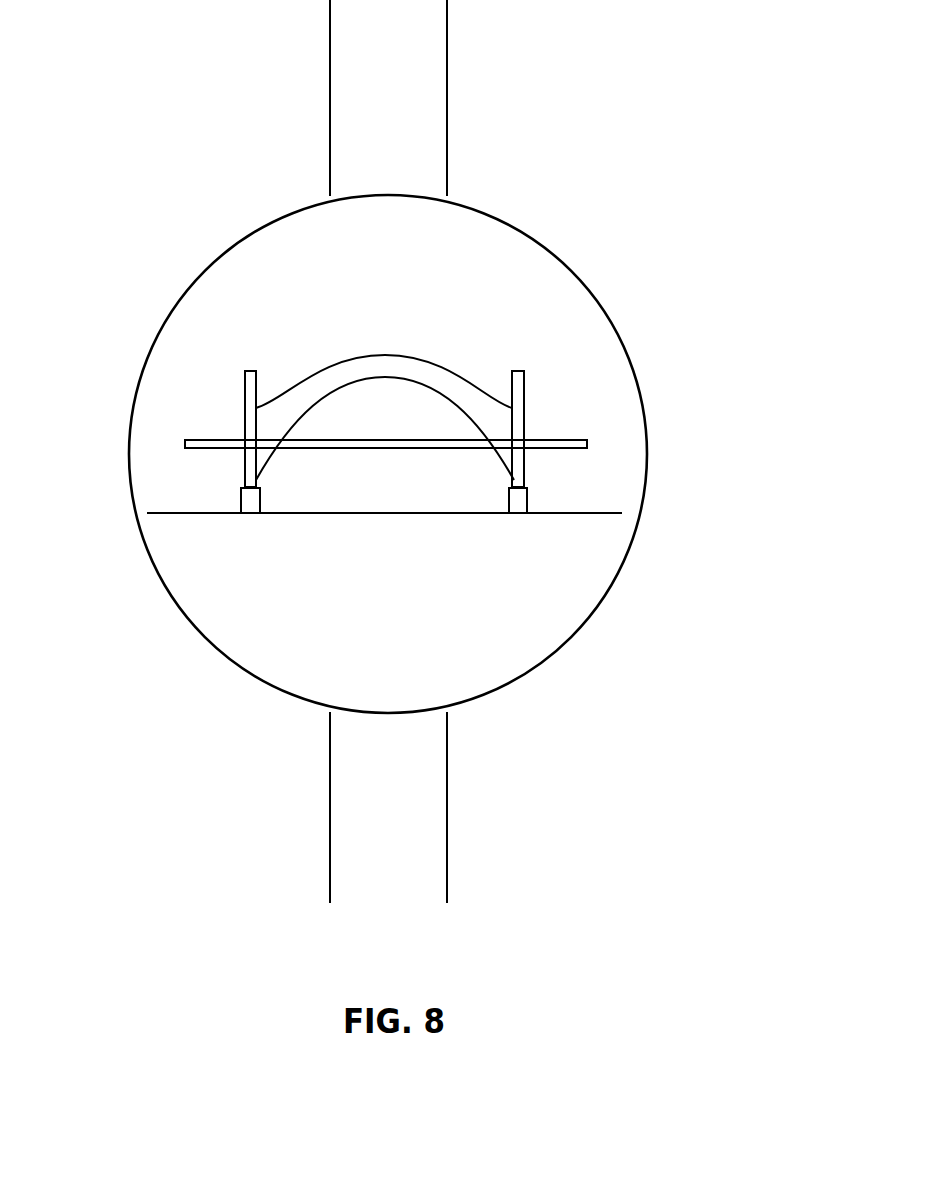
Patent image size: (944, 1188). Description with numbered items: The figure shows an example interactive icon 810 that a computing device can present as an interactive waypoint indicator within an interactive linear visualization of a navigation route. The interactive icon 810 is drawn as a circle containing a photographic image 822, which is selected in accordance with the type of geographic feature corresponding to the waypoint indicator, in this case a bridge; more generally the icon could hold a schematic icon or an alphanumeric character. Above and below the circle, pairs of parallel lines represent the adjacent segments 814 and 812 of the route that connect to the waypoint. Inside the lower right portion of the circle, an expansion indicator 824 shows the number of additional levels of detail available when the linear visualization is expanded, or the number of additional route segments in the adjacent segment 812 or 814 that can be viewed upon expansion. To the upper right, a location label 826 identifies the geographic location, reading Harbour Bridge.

The interactive icon 810 is at (172, 597).
The adjacent segment 812 is at (447, 804).
The adjacent segment 814 is at (447, 72).
The photographic image 822 is at (185, 505).
The expansion indicator 824 is at (537, 635).
The location label 826 is at (733, 250).